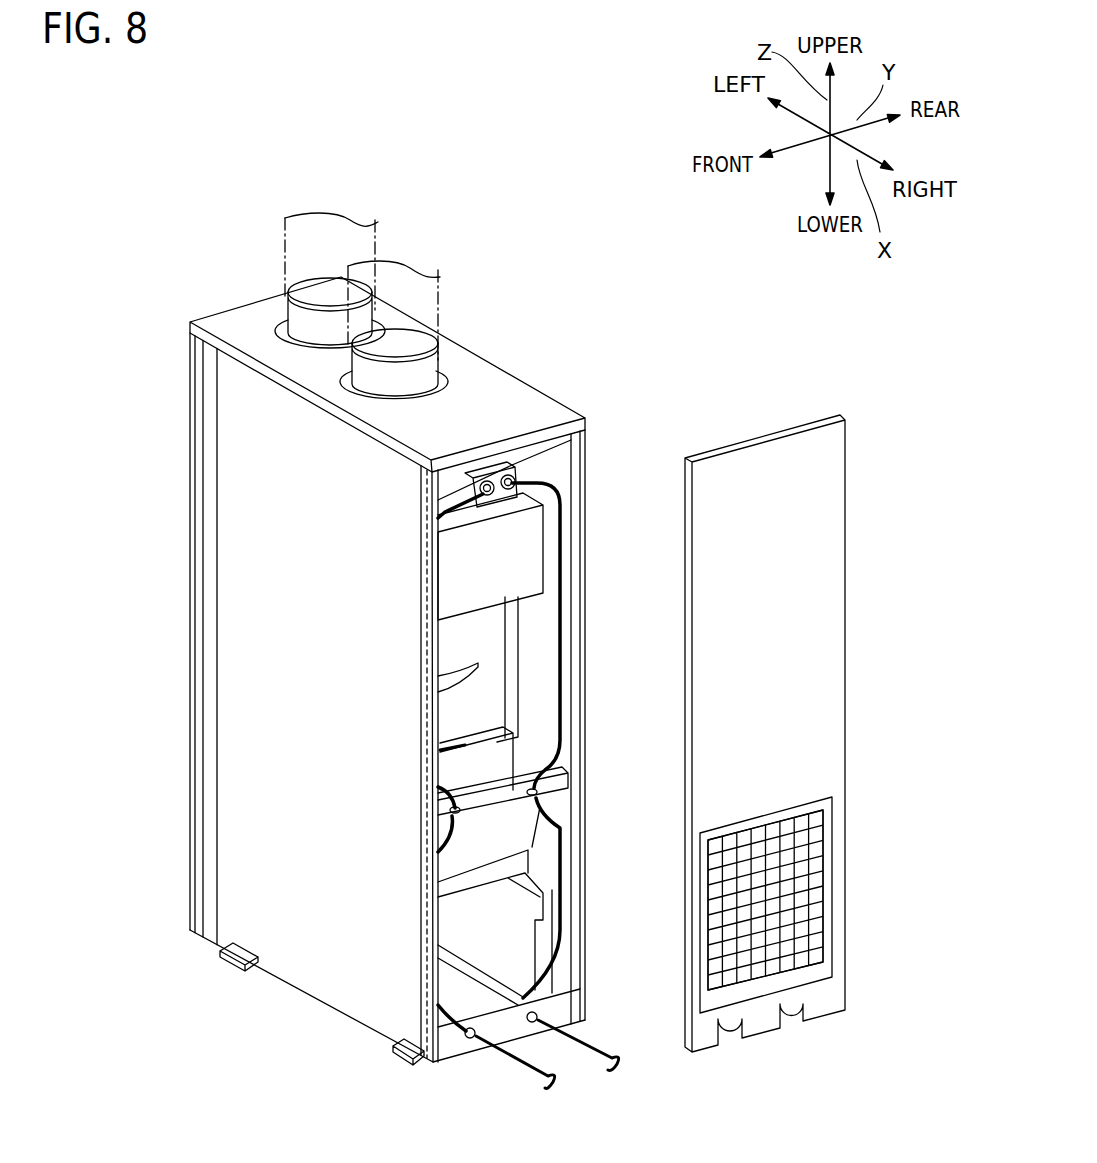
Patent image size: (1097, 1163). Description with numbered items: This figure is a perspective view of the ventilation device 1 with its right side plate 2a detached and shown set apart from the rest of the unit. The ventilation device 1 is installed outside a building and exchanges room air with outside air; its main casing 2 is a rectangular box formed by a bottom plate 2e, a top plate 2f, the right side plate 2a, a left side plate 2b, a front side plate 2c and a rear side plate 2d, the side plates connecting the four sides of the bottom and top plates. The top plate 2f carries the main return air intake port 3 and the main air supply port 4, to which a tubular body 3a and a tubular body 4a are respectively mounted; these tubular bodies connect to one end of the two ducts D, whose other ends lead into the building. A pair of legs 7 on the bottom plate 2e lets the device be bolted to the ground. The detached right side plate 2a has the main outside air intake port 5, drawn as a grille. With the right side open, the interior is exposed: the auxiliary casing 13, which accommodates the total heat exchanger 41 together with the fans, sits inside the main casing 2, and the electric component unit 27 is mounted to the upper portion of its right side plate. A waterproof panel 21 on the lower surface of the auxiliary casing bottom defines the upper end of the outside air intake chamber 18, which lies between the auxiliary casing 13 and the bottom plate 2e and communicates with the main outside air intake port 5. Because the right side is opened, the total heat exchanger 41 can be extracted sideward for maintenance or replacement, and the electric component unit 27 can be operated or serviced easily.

The ventilation device 1 is at (167, 312).
The main casing 2 is at (175, 389).
The right side plate 2a is at (780, 612).
The left side plate 2b is at (190, 498).
The front side plate 2c is at (253, 552).
The rear side plate 2d is at (547, 453).
The bottom plate 2e is at (327, 998).
The top plate 2f is at (515, 402).
The main return air intake port 3 is at (280, 320).
The tubular body 3a is at (312, 277).
The main air supply port 4 is at (437, 373).
The tubular body 4a is at (413, 318).
The main outside air intake port 5 is at (816, 842).
The legs 7 is at (397, 1055).
The auxiliary casing 13 is at (497, 757).
The outside air intake chamber 18 is at (490, 930).
The waterproof panel 21 is at (485, 817).
The electric component unit 27 is at (507, 565).
The total heat exchanger 41 is at (492, 643).
The ducts D is at (505, 286).